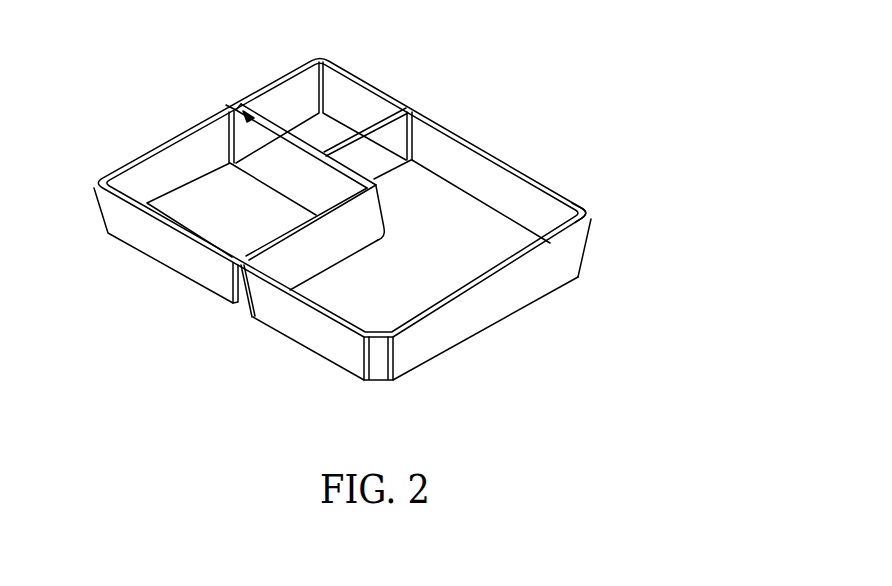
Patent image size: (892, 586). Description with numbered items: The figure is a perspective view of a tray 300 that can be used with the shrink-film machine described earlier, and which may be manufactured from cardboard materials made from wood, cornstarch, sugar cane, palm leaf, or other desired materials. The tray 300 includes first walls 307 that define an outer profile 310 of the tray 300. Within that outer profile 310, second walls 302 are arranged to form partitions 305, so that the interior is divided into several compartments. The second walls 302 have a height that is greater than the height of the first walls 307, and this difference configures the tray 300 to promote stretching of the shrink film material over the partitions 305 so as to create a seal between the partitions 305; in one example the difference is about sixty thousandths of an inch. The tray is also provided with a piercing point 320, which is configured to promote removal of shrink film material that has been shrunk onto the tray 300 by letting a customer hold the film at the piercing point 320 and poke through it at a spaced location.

The tray 300 is at (521, 91).
The second walls 302 is at (274, 122).
The partitions 305 is at (324, 120).
The first walls 307 is at (143, 157).
The outer profile 310 is at (605, 214).
The piercing point 320 is at (224, 102).